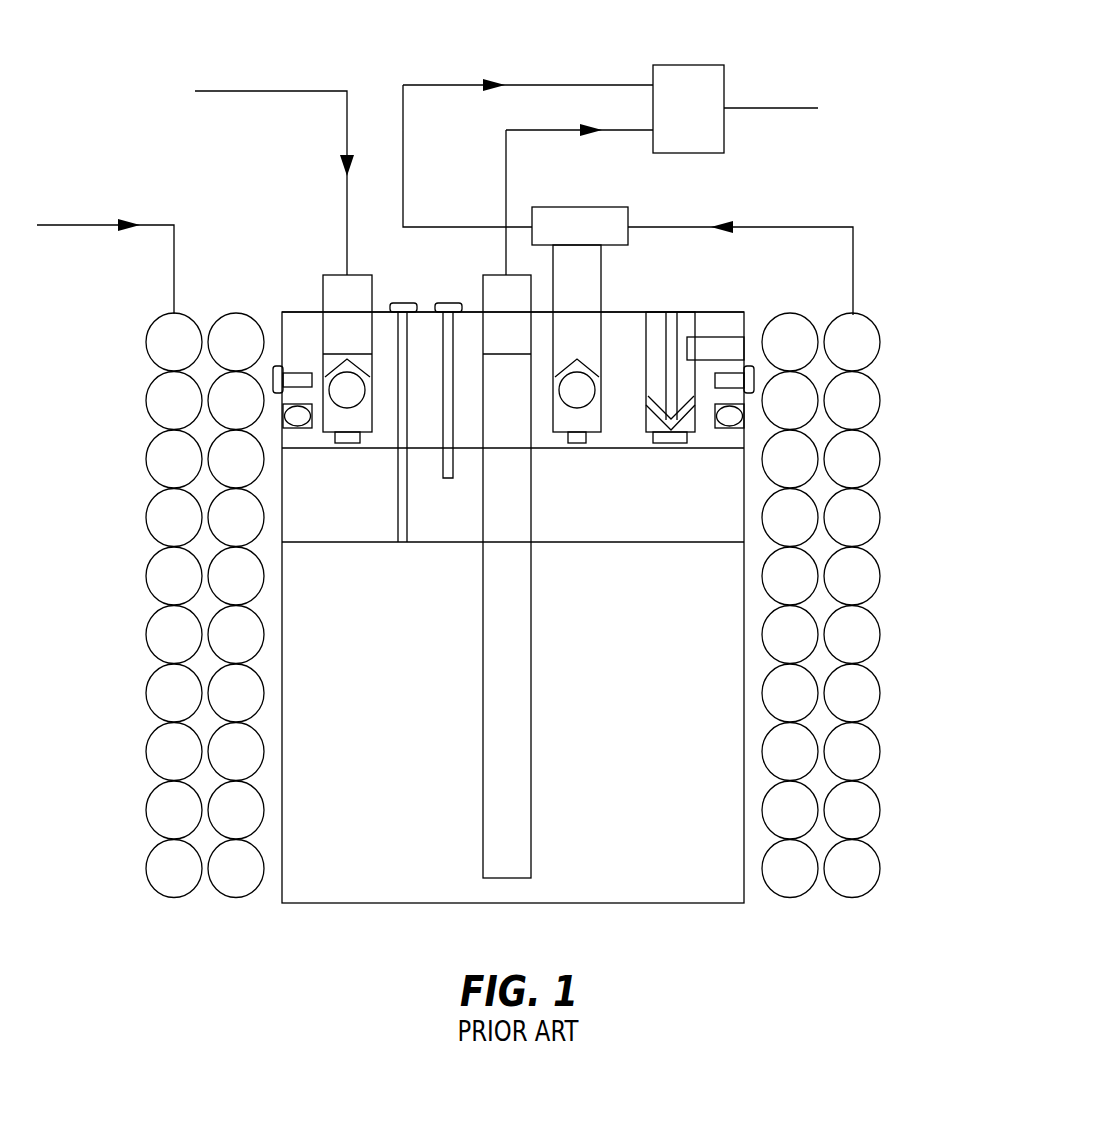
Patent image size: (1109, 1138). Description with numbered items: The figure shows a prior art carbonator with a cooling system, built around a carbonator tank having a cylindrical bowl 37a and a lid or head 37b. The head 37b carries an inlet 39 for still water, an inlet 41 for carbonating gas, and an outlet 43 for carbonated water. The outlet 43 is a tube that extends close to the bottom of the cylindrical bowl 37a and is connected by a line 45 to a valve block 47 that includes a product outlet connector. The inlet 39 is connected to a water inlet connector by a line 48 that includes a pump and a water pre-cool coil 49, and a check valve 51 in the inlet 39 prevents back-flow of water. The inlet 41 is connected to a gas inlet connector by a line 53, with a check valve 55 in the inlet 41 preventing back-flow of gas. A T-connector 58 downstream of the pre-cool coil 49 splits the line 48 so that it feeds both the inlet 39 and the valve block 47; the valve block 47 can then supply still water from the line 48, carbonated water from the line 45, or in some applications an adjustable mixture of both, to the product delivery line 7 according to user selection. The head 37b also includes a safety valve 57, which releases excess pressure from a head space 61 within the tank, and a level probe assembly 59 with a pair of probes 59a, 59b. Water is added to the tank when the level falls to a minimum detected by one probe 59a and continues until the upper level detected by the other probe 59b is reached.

The product delivery line 7 is at (762, 107).
The cylindrical bowl 37a is at (655, 904).
The lid or head 37b is at (633, 353).
The inlet for still water 39 is at (572, 445).
The inlet for carbonating gas 41 is at (352, 447).
The outlet for carbonated water 43 is at (508, 785).
The line 45 is at (506, 182).
The valve block 47 is at (674, 63).
The line 48 is at (99, 224).
The water pre-cool coil 49 is at (167, 572).
The check valve 51 is at (592, 388).
The line 53 is at (263, 90).
The check valve 55 is at (347, 382).
The safety valve 57 is at (685, 327).
The T-connector 58 is at (577, 206).
The level probe assembly 59 is at (448, 303).
The probe 59a is at (397, 522).
The probe 59b is at (453, 462).
The head space 61 is at (699, 486).